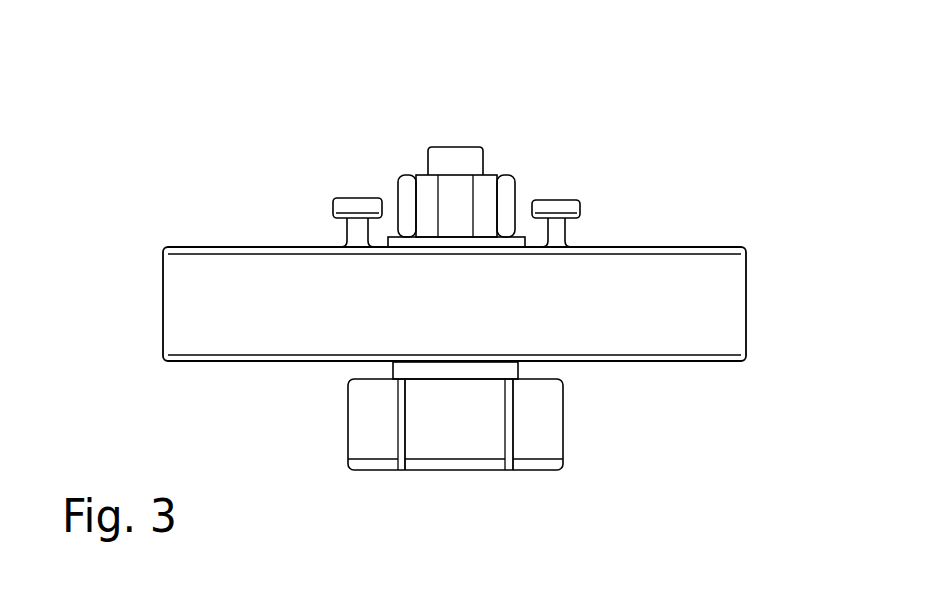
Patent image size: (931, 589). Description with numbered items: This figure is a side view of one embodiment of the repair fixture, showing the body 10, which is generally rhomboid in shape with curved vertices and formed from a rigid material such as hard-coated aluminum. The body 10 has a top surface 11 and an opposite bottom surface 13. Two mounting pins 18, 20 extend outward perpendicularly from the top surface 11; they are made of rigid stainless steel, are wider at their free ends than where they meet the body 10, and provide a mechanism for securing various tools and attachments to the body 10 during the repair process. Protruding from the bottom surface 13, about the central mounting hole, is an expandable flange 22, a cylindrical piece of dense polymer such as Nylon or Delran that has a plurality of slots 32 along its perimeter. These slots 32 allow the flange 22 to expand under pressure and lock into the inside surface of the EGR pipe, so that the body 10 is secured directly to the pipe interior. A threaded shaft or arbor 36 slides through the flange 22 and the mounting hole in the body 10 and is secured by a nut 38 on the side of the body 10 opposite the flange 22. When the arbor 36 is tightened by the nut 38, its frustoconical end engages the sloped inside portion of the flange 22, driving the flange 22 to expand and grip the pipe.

The body 10 is at (267, 298).
The top surface 11 is at (692, 247).
The bottom surface 13 is at (687, 365).
The mounting pin 18 is at (360, 210).
The mounting pin 20 is at (557, 208).
The expandable flange 22 is at (535, 423).
The slots 32 is at (402, 424).
The threaded arbor 36 is at (448, 162).
The nut 38 is at (505, 203).